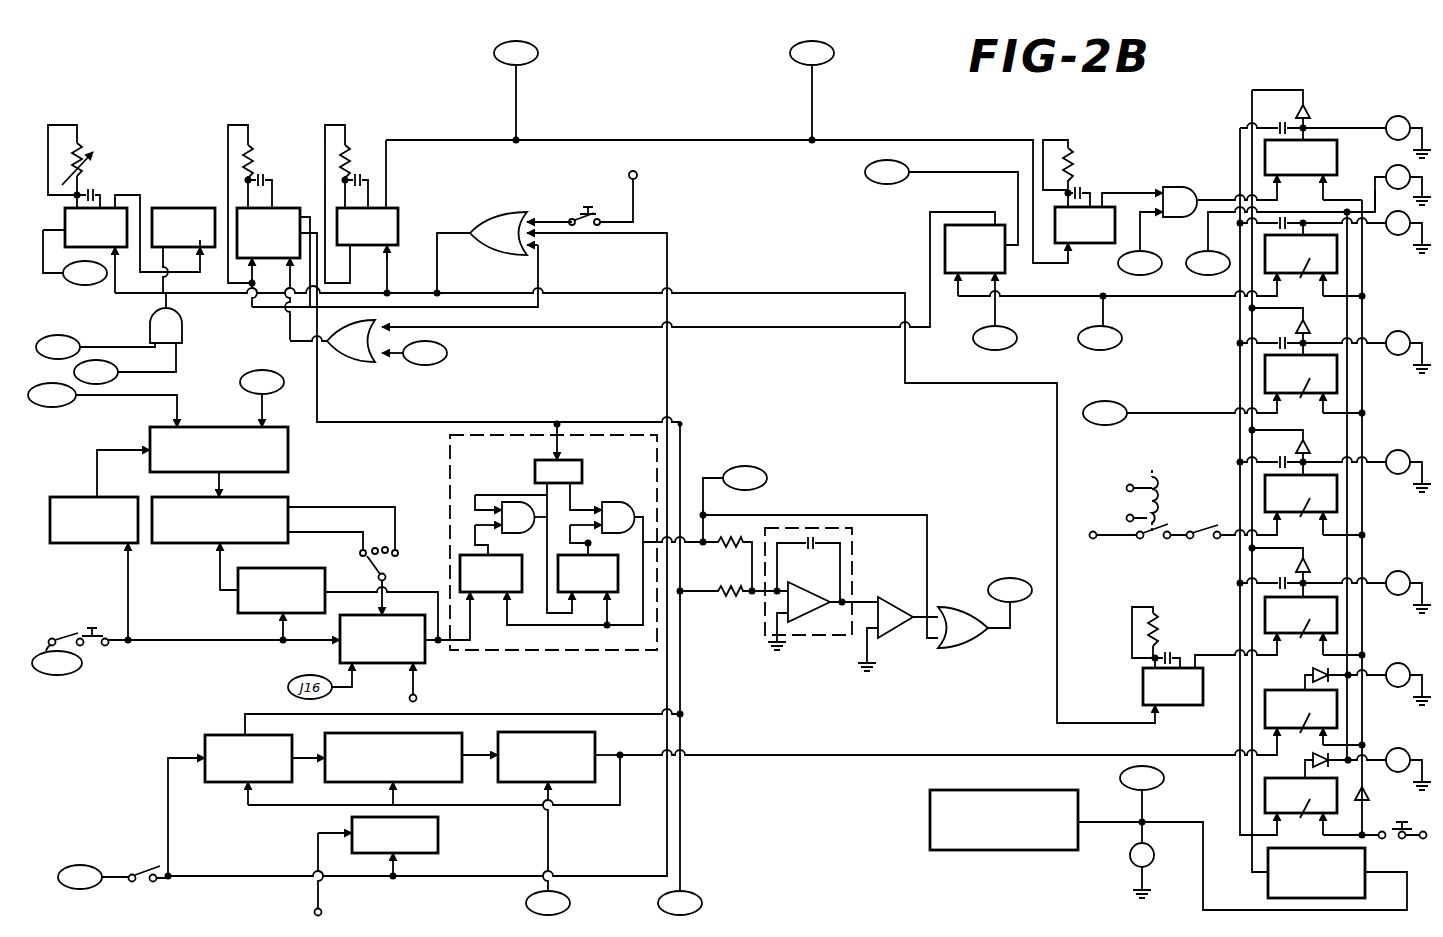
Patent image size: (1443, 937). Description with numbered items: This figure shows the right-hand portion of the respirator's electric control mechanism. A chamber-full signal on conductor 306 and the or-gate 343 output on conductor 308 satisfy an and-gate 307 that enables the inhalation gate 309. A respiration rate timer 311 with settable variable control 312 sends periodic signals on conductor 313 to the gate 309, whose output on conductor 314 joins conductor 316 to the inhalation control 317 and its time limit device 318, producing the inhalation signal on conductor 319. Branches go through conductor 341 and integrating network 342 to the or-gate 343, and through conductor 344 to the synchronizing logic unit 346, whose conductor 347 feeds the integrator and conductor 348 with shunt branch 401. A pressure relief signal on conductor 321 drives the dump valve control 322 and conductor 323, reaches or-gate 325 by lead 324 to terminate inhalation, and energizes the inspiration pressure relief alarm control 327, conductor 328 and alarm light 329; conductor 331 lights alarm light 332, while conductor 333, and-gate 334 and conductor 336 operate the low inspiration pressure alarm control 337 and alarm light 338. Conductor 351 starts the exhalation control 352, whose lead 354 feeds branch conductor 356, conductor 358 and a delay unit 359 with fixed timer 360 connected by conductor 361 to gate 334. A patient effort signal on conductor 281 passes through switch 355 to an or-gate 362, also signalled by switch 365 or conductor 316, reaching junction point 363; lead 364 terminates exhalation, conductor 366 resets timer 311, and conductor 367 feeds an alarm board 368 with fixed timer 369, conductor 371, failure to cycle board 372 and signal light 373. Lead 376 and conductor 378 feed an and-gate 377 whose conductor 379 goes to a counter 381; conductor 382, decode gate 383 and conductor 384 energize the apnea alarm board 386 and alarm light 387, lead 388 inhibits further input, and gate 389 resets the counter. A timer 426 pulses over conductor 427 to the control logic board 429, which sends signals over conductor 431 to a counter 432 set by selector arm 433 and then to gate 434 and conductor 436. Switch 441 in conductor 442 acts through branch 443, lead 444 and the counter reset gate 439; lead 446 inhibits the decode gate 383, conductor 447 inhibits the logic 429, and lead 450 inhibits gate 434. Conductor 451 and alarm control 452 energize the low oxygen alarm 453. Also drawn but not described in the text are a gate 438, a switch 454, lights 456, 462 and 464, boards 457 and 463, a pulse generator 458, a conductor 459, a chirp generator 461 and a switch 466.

The conductor 281 is at (666, 272).
The conductor 306 is at (115, 346).
The and-gate 307 is at (183, 318).
The conductor 308 is at (178, 352).
The inhalation gate 309 is at (168, 206).
The respiration rate timer 311 is at (66, 222).
The settable variable control 312 is at (92, 140).
The conductor 313 is at (126, 188).
The conductor 314 is at (200, 205).
The conductor 316 is at (250, 310).
The inhalation control 317 is at (276, 205).
The time limit device 318 is at (255, 140).
The conductor 319 is at (142, 400).
The conductor 321 is at (1030, 334).
The dump valve control 322 is at (1007, 275).
The conductor 323 is at (960, 175).
The lead 324 is at (736, 332).
The or-gate 325 is at (350, 362).
The inspiration pressure relief alarm control 327 is at (1283, 290).
The conductor 328 is at (1375, 281).
The alarm light 329 is at (1398, 236).
The conductor 331 is at (1206, 238).
The alarm light 332 is at (1386, 173).
The conductor 333 is at (1160, 251).
The and-gate 334 is at (1180, 185).
The conductor 336 is at (1208, 198).
The low inspiration pressure alarm control 337 is at (1337, 158).
The alarm light 338 is at (1407, 118).
The branch conductor 341 is at (692, 597).
The integrating network 342 is at (856, 556).
The or-gate 343 is at (958, 607).
The branch conductor 344 is at (550, 440).
The synchronizing logic unit 346 is at (448, 478).
The conductor 347 is at (703, 548).
The conductor 348 is at (703, 470).
The conductor 351 is at (386, 292).
The exhalation control 352 is at (400, 208).
The lead 354 is at (658, 138).
The switch 355 is at (155, 862).
The branch conductor 356 is at (516, 103).
The conductor 358 is at (812, 101).
The delay unit 359 is at (1078, 258).
The fixed timer 360 is at (1070, 140).
The conductor 361 is at (1148, 193).
The or-gate 362 is at (500, 212).
The junction point 363 is at (445, 292).
The lead 364 is at (390, 292).
The switch 365 is at (582, 210).
The conductor 366 is at (112, 297).
The conductor 367 is at (807, 293).
The alarm board 368 is at (1142, 684).
The fixed timer 369 is at (1162, 628).
The conductor 371 is at (1230, 655).
The failure to cycle board 372 is at (1312, 605).
The signal light 373 is at (1410, 573).
The lead 376 is at (170, 845).
The and-gate 377 is at (207, 735).
The conductor 378 is at (555, 714).
The conductor 379 is at (303, 766).
The counter 381 is at (378, 782).
The conductor 382 is at (476, 766).
The decode gate 383 is at (600, 742).
The conductor 384 is at (770, 752).
The apnea alarm board 386 is at (1325, 717).
The alarm light 387 is at (1412, 663).
The lead 388 is at (458, 805).
The gate 389 is at (438, 850).
The shunt branch 401 is at (845, 515).
The timer 426 is at (62, 495).
The conductor 427 is at (112, 455).
The control logic board 429 is at (290, 455).
The conductor 431 is at (226, 484).
The counter 432 is at (168, 545).
The selector arm 433 is at (390, 578).
The gate 434 is at (428, 660).
The conductor 436 is at (475, 640).
The gate 438 is at (338, 568).
The counter reset gate 439 is at (236, 592).
The switch 441 is at (92, 628).
The conductor 442 is at (110, 648).
The branch 443 is at (125, 578).
The lead 444 is at (283, 636).
The lead 446 is at (550, 842).
The conductor 447 is at (258, 420).
The lead 450 is at (418, 697).
The conductor 451 is at (1185, 412).
The alarm control 452 is at (1312, 364).
The low oxygen alarm 453 is at (1398, 356).
The relay switch 454 is at (1165, 495).
The lamp 456 is at (1400, 450).
The flip-flop 457 is at (1312, 486).
The pulse generator 458 is at (1268, 885).
The line 459 is at (1178, 822).
The chirp generator 461 is at (988, 850).
The lamp 462 is at (1130, 862).
The flip-flop 463 is at (1325, 799).
The lamp 464 is at (1398, 748).
The pushbutton switch 466 is at (1408, 820).